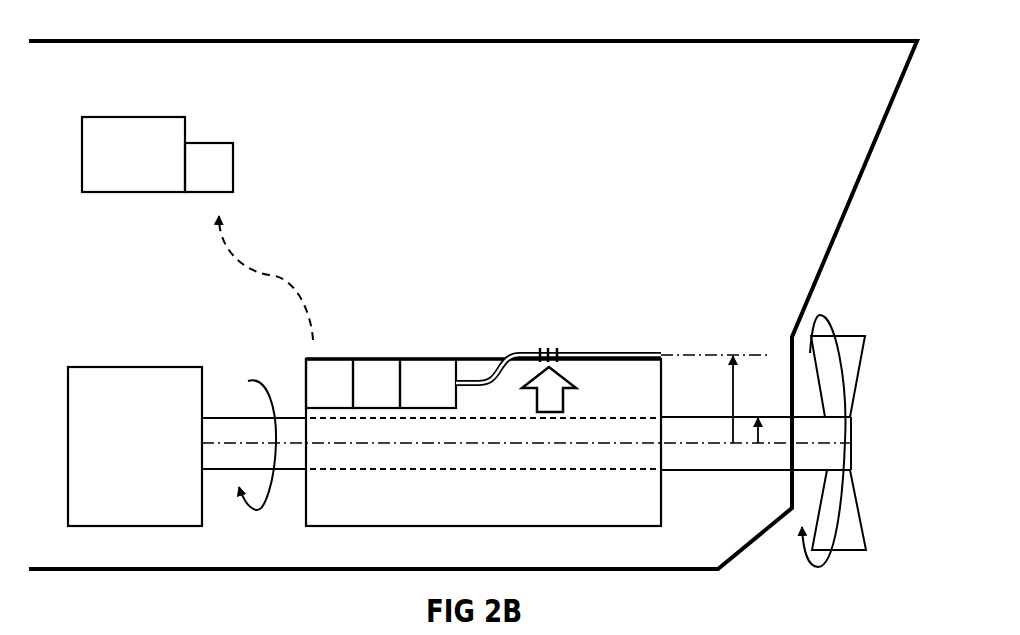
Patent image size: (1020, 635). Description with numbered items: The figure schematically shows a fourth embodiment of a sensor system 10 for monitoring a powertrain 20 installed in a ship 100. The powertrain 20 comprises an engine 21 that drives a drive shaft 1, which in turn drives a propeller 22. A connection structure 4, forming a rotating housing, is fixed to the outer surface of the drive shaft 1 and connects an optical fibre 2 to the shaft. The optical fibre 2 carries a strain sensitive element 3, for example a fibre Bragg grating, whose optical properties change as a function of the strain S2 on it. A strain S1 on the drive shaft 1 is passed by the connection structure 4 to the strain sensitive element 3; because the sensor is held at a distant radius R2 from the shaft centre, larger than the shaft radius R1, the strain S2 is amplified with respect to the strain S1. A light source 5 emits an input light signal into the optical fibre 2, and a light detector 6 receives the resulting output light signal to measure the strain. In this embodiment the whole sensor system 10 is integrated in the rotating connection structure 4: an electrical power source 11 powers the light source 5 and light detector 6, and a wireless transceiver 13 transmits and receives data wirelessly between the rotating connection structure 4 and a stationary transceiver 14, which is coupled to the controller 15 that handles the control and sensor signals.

The drive shaft 1 is at (228, 410).
The optical fibre 2 is at (463, 350).
The strain sensitive element 3 is at (548, 345).
The connection structure 4 is at (670, 368).
The light source 5 is at (428, 383).
The light detector 6 is at (428, 383).
The sensor system 10 is at (370, 298).
The electrical power source 11 is at (376, 383).
The wireless transceiver 13 is at (329, 383).
The stationary transceiver 14 is at (249, 241).
The controller 15 is at (133, 154).
The powertrain 20 is at (137, 310).
The engine 21 is at (121, 462).
The propeller 22 is at (851, 334).
The ship 100 is at (805, 107).
The strain on the drive shaft S1 is at (565, 444).
The strain on the strain sensitive element S2 is at (567, 345).
The shaft radius R1 is at (759, 415).
The distant radius R2 is at (733, 383).